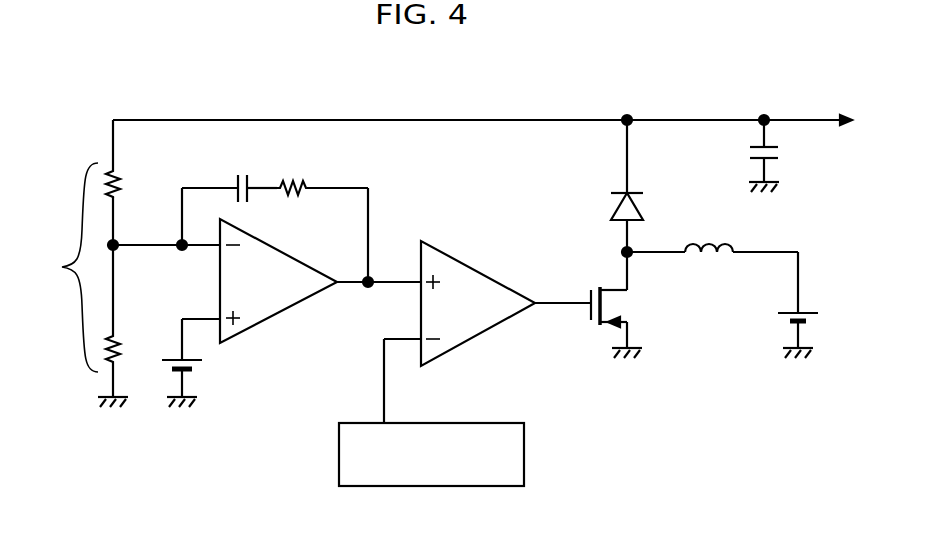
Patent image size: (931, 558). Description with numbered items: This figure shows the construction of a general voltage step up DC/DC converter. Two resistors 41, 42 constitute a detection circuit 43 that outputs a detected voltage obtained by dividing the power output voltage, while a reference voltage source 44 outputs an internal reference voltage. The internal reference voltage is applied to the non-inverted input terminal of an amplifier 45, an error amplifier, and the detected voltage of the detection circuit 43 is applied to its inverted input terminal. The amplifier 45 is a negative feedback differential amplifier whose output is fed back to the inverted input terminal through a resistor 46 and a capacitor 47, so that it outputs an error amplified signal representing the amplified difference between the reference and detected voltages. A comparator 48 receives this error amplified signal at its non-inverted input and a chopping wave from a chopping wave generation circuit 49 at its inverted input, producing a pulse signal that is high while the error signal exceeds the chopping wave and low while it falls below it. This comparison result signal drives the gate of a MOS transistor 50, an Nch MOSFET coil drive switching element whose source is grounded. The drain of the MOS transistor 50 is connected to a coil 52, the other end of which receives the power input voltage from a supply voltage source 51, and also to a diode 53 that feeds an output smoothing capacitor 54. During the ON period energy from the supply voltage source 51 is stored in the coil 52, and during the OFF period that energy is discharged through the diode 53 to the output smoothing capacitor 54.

The resistor 41 is at (118, 170).
The resistor 42 is at (118, 357).
The detection circuit 43 is at (112, 296).
The reference voltage source 44 is at (193, 370).
The amplifier 45 is at (278, 310).
The resistor 46 is at (280, 180).
The capacitor 47 is at (240, 175).
The comparator 48 is at (457, 268).
The chopping wave generation circuit 49 is at (516, 440).
The MOS transistor 50 is at (627, 306).
The supply voltage source 51 is at (780, 322).
The coil 52 is at (718, 240).
The diode 53 is at (612, 205).
The output smoothing capacitor 54 is at (750, 150).